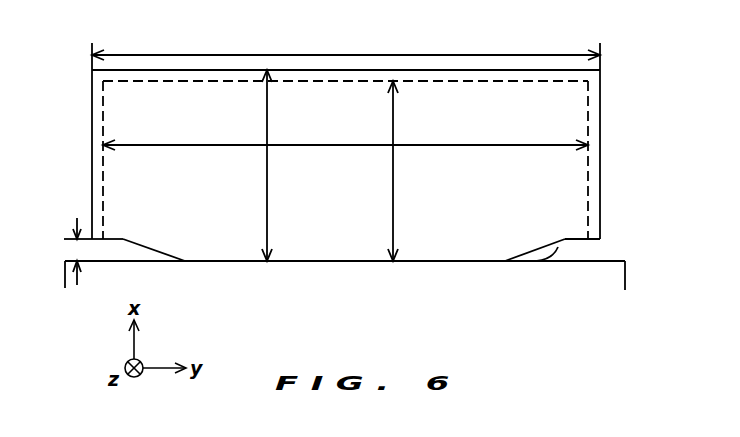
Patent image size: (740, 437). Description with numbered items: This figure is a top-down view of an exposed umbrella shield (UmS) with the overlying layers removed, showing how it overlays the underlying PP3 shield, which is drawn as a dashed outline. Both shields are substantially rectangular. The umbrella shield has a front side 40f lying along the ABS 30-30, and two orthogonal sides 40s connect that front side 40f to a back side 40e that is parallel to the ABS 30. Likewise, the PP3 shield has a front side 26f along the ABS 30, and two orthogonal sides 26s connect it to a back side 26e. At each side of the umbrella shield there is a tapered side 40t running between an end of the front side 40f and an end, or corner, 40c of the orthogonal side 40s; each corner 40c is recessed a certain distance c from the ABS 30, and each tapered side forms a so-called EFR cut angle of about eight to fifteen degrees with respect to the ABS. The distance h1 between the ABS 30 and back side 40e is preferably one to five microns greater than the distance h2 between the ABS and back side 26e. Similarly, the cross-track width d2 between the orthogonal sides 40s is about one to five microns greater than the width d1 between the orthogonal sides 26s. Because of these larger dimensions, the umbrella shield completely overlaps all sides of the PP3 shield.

The back side of umbrella shield 40e is at (330, 70).
The back side of PP3 shield 26e is at (484, 81).
The orthogonal sides of umbrella shield 40s is at (92, 109).
The orthogonal sides of PP3 shield 26s is at (592, 108).
The end of orthogonal side 40c is at (600, 239).
The tapered sides of umbrella shield 40t is at (540, 262).
The front side of umbrella shield 40f is at (285, 262).
The front side of PP3 shield 26f is at (366, 262).
The ABS 30 is at (344, 287).
The width between orthogonal sides of PP3 d1 is at (345, 135).
The cross-track width of umbrella shield d2 is at (346, 50).
The distance between ABS and back side of umbrella shield h1 is at (255, 165).
The distance between ABS and back side of PP3 h2 is at (382, 171).
The recess distance of corner c is at (72, 248).